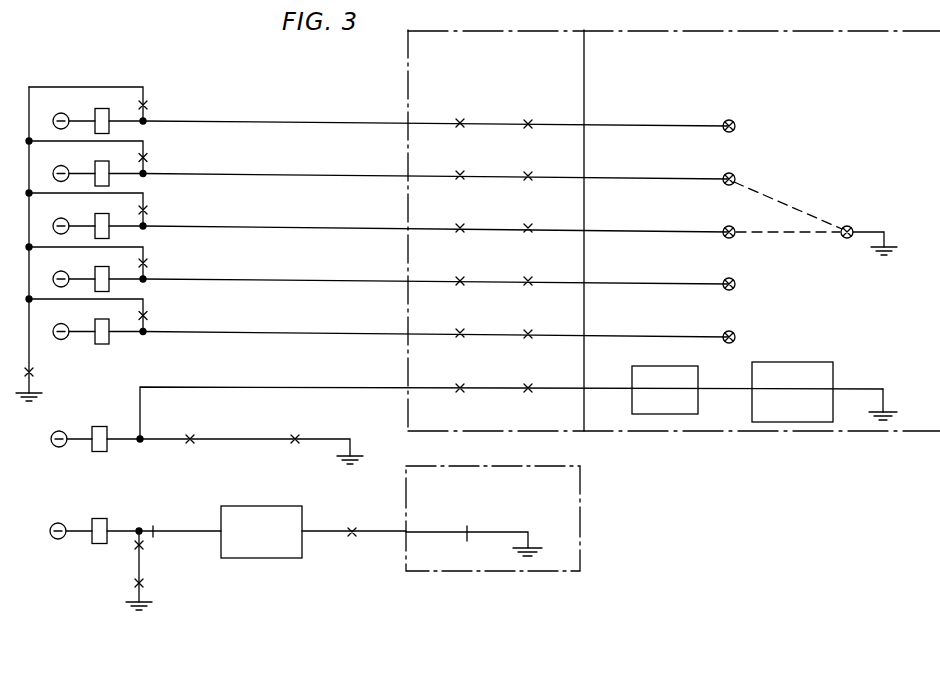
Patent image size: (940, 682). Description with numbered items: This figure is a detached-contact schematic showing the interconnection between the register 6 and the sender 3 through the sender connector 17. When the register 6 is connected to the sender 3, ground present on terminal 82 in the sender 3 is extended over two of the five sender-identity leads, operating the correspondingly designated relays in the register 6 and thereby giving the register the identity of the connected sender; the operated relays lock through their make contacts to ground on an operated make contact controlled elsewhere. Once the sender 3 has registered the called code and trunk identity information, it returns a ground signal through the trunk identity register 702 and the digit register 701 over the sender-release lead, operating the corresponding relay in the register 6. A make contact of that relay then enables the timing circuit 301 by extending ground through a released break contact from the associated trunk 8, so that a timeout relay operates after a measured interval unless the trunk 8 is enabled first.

The sender 3 is at (758, 193).
The register 6 is at (449, 327).
The trunk 8 is at (493, 518).
The sender connector 17 is at (674, 230).
The terminal 82 is at (852, 228).
The timing circuit 301 is at (292, 506).
The digit register 701 is at (665, 366).
The trunk identity register 702 is at (808, 362).